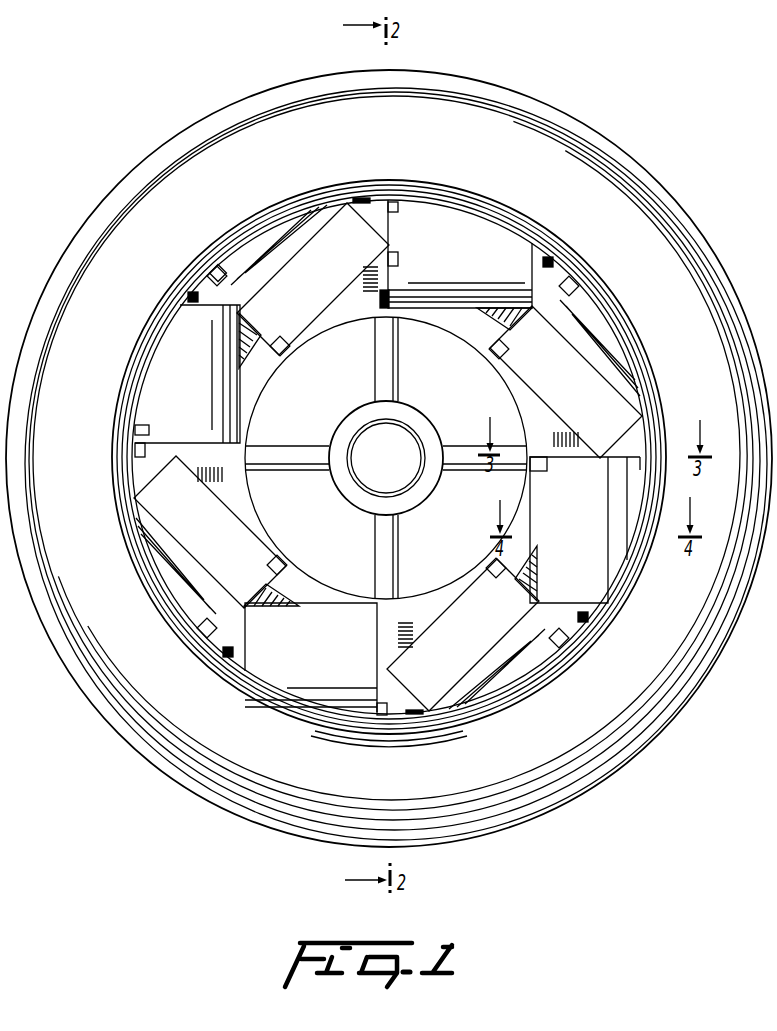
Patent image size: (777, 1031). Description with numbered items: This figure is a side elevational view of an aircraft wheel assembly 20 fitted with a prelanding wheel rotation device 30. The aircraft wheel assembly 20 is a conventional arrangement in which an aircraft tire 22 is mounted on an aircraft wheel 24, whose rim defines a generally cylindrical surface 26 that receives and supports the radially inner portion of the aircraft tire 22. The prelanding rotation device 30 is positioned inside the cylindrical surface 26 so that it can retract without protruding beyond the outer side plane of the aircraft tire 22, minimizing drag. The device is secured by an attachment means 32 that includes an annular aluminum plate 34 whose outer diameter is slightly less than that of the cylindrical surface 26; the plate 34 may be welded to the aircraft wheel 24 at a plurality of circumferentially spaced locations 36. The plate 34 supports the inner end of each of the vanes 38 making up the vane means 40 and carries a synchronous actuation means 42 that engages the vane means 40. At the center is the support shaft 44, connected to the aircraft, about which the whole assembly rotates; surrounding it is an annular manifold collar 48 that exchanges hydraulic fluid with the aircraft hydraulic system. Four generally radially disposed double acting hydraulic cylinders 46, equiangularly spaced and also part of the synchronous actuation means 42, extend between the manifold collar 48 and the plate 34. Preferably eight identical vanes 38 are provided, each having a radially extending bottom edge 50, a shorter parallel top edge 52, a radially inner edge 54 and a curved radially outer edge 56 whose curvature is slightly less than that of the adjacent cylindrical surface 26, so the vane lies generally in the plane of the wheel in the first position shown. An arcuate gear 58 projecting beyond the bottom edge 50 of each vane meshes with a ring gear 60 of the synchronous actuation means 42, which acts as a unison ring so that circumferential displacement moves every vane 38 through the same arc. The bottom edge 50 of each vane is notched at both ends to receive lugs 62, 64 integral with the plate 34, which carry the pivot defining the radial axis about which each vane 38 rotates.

The aircraft wheel assembly 20 is at (617, 122).
The aircraft tire 22 is at (200, 127).
The aircraft wheel 24 is at (250, 688).
The cylindrical surface 26 is at (228, 636).
The prelanding wheel rotation device 30 is at (465, 663).
The attachment means 32 is at (575, 607).
The plate 34 is at (567, 310).
The circumferentially spaced locations 36 is at (357, 195).
The vane 38 is at (497, 108).
The vane means 40 is at (186, 369).
The synchronous actuation means 42 is at (262, 374).
The support shaft 44 is at (405, 443).
The double acting hydraulic cylinders 46 is at (400, 352).
The manifold collar 48 is at (347, 490).
The bottom edge 50 is at (187, 297).
The top edge 52 is at (350, 197).
The radially inner edge 54 is at (333, 308).
The radially outer edge 56 is at (250, 233).
The arcuate gear 58 is at (266, 328).
The ring gear 60 is at (392, 218).
The lug 62 is at (206, 274).
The lug 64 is at (293, 343).